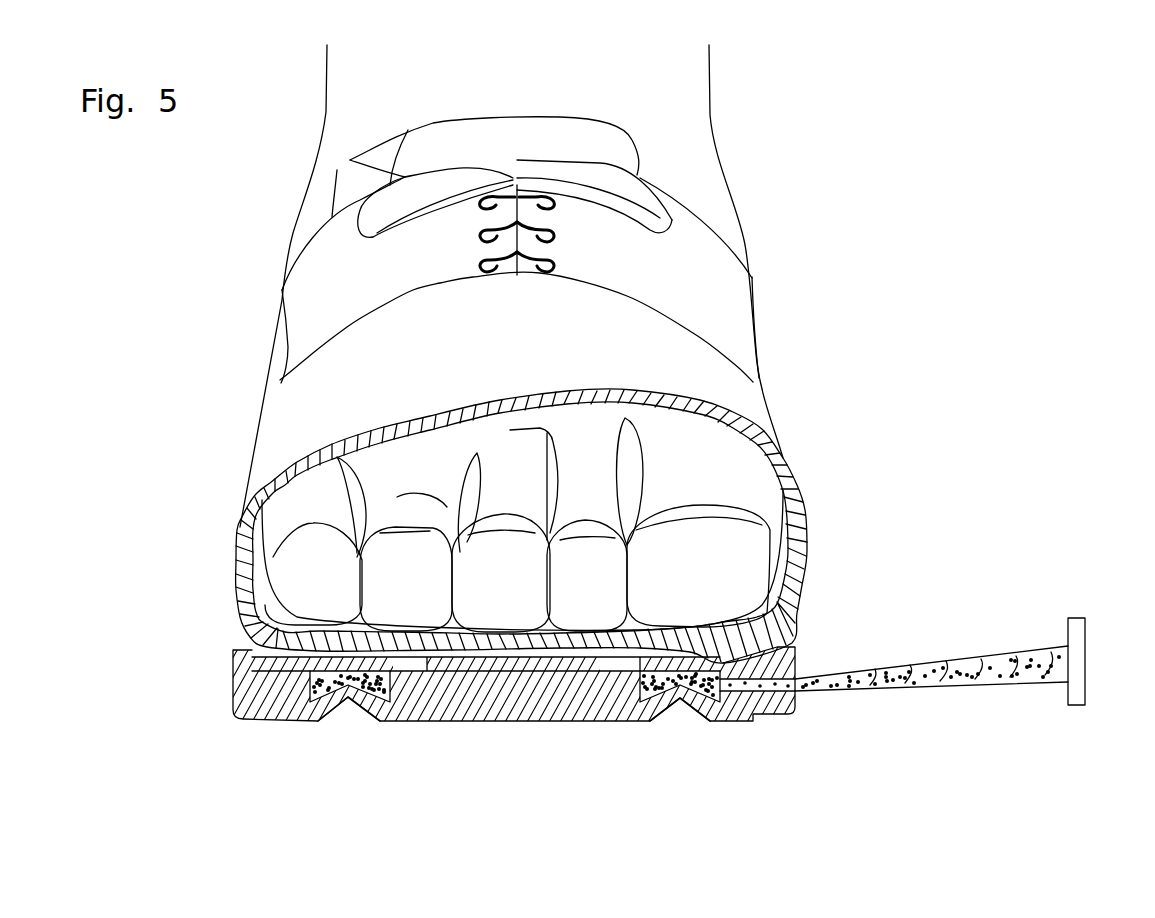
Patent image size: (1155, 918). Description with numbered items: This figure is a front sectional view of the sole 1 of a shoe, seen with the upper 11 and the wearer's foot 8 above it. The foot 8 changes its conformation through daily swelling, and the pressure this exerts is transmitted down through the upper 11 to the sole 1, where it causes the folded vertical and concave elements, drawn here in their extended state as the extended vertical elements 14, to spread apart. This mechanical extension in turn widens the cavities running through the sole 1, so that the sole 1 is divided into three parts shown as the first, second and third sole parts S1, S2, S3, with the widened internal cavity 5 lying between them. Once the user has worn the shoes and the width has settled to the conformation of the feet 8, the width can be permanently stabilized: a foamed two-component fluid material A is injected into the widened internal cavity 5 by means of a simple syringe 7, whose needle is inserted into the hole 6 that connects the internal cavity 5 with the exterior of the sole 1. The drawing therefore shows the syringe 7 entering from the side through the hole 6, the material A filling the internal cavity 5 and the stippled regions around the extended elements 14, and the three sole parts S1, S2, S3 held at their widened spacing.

The sole 1 is at (493, 718).
The internal cavity 5 is at (243, 648).
The hole 6 is at (793, 688).
The syringe 7 is at (1085, 648).
The foot 8 is at (727, 177).
The upper 11 is at (760, 323).
The extended vertical elements 14 is at (673, 703).
The foamed two-component fluid material A is at (960, 663).
The first sole part S1 is at (273, 697).
The second sole part S2 is at (523, 703).
The third sole part S3 is at (753, 700).